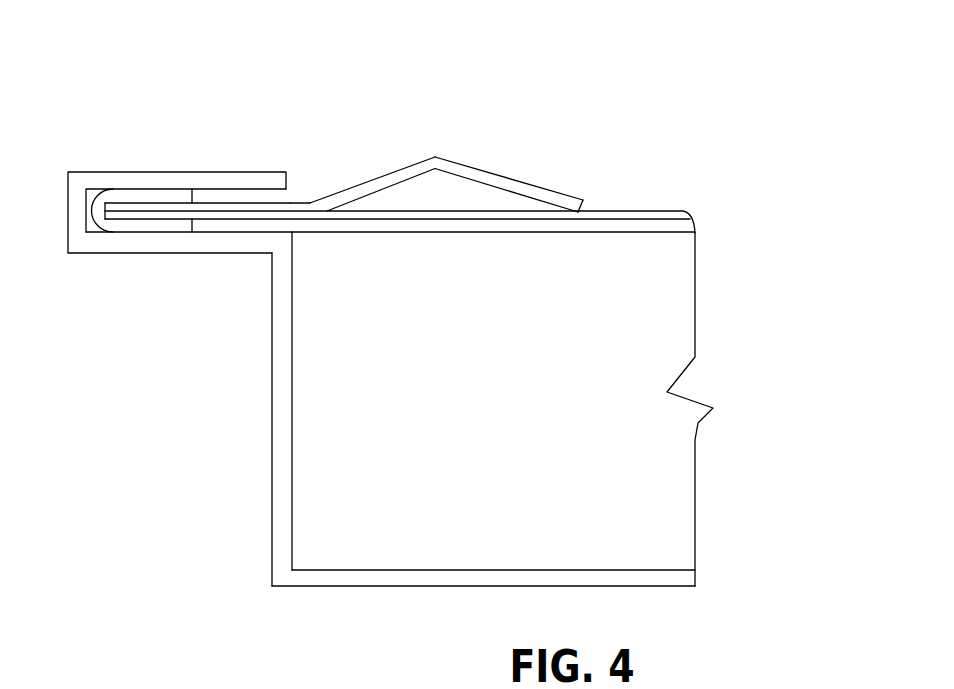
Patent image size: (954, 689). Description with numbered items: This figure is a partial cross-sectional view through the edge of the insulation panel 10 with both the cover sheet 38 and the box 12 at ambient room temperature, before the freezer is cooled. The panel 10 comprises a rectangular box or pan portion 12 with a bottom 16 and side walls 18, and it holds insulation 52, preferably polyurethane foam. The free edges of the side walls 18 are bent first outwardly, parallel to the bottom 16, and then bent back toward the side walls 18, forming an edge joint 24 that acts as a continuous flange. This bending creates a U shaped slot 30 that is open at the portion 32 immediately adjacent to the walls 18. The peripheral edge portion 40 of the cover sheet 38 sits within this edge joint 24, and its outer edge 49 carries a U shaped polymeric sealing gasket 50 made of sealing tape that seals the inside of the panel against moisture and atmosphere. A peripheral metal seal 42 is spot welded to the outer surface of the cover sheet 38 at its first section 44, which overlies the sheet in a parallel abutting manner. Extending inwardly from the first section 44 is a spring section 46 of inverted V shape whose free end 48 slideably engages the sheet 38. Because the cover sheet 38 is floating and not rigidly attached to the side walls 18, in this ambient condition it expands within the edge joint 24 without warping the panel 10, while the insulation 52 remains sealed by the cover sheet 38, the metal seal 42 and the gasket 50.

The insulation panel 10 is at (342, 167).
The box or pan portion 12 is at (268, 371).
The bottom 16 is at (428, 587).
The side walls 18 is at (270, 462).
The edge joint 24 is at (163, 170).
The U shaped slot 30 is at (220, 227).
The open portion of the slot 32 is at (306, 200).
The cover sheet 38 is at (672, 210).
The peripheral edge portion 40 is at (142, 215).
The peripheral metal seal 42 is at (521, 177).
The first section 44 is at (222, 200).
The spring section 46 is at (393, 168).
The free end 48 is at (588, 202).
The outer edge 49 is at (105, 212).
The sealing gasket 50 is at (118, 200).
The insulation 52 is at (660, 292).